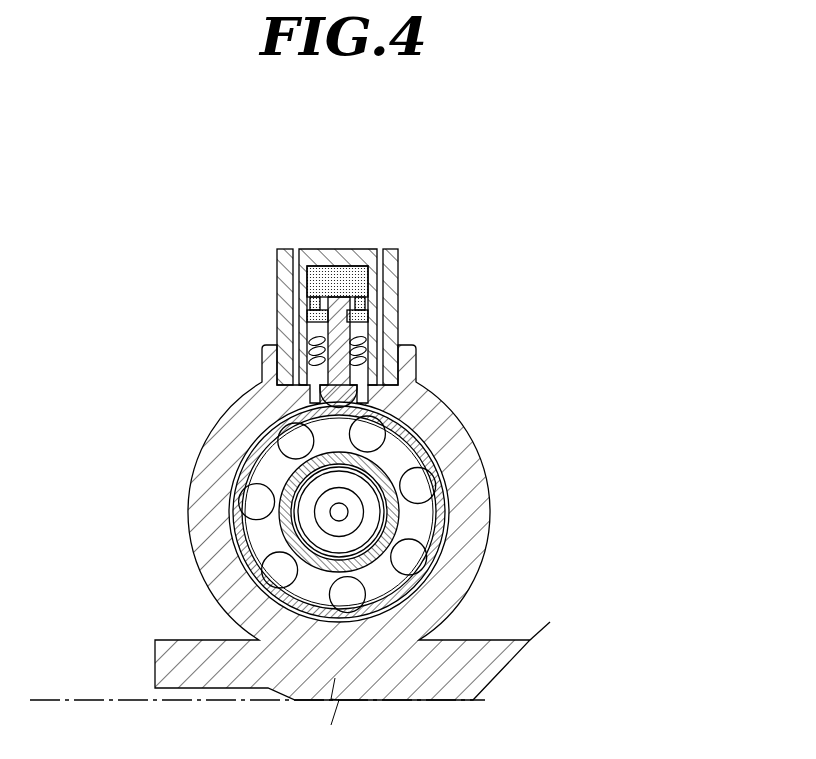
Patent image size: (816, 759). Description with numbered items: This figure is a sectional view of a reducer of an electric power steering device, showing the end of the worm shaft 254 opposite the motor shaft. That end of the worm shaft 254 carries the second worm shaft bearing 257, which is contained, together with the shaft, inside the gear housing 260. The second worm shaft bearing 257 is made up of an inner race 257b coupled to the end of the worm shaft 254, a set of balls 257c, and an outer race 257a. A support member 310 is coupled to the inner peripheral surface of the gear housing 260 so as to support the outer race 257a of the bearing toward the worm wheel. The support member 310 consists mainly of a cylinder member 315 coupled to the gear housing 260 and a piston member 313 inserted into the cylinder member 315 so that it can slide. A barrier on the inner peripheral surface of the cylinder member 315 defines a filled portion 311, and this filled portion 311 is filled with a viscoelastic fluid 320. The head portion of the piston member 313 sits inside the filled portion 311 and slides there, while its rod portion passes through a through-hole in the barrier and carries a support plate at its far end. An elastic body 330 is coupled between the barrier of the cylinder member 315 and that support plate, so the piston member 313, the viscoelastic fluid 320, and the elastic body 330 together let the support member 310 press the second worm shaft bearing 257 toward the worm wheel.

The worm shaft 254 is at (362, 517).
The second worm shaft bearing 257 is at (237, 512).
The outer race 257a is at (233, 537).
The inner race 257b is at (255, 505).
The ball 257c is at (242, 510).
The gear housing 260 is at (462, 475).
The support member 310 is at (312, 280).
The filled portion 311 is at (346, 265).
The piston member 313 is at (310, 375).
The cylinder member 315 is at (330, 253).
The viscoelastic fluid 320 is at (360, 280).
The elastic body 330 is at (363, 338).